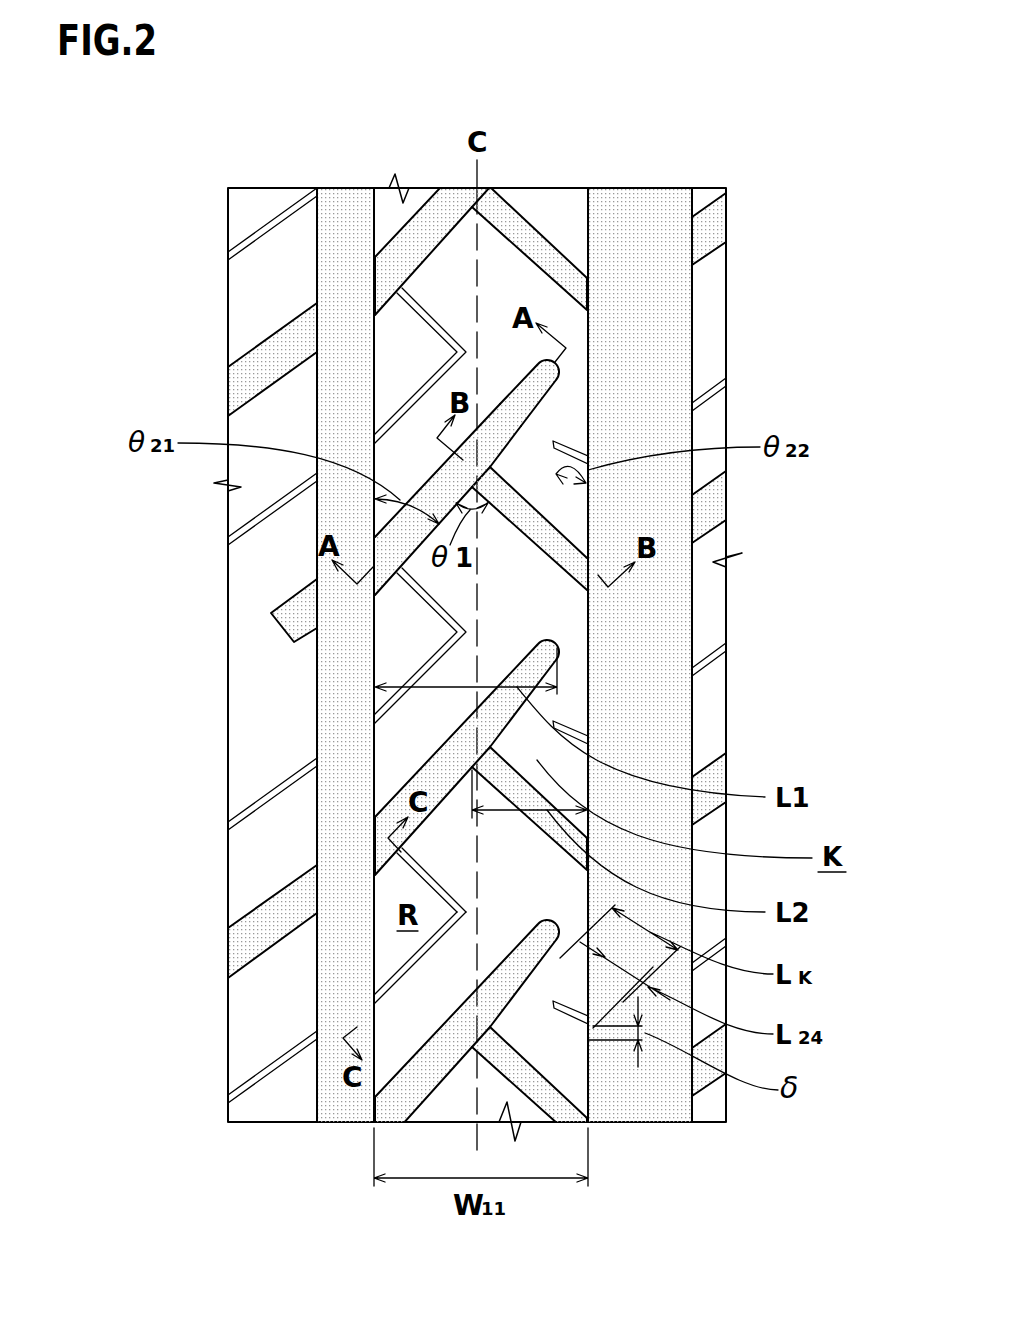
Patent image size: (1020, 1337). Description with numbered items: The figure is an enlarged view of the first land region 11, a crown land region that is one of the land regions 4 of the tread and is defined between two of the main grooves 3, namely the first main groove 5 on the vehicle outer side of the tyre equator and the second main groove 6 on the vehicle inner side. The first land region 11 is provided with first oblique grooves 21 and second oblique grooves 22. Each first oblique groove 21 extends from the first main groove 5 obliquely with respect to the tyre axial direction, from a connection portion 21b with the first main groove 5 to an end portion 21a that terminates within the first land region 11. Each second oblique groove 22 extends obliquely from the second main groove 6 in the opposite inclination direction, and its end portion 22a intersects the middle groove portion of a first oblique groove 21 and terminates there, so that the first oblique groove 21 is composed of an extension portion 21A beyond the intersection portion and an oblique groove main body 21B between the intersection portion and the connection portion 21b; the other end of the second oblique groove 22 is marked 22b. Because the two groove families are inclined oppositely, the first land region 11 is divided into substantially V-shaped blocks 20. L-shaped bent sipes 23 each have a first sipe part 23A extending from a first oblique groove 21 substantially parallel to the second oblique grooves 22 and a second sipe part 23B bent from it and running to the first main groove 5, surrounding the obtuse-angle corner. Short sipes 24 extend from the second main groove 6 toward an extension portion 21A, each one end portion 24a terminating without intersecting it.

The main grooves 3 is at (496, 614).
The land regions 4 is at (469, 610).
The first main groove 5 is at (347, 215).
The second main groove 6 is at (636, 215).
The first land region 11 is at (588, 176).
The blocks 20 is at (533, 603).
The first oblique grooves 21 is at (125, 274).
The extension portion 21A is at (520, 386).
The oblique groove main body 21B is at (462, 448).
The end portion 21a is at (566, 358).
The connection portion 21b is at (374, 631).
The second oblique grooves 22 is at (531, 508).
The end portion 22a is at (506, 456).
The other end of second protrusion 22b is at (577, 603).
The bent sipes 23 is at (394, 714).
The first sipe part 23A is at (420, 864).
The second sipe part 23B is at (430, 951).
The short sipes 24 is at (540, 700).
The one end portion 24a is at (570, 710).